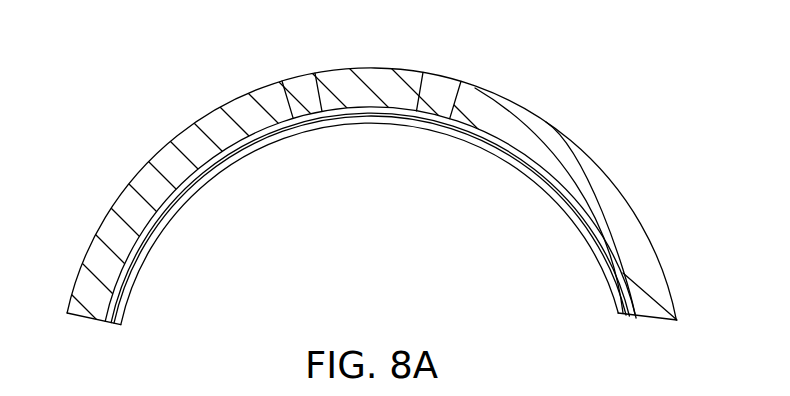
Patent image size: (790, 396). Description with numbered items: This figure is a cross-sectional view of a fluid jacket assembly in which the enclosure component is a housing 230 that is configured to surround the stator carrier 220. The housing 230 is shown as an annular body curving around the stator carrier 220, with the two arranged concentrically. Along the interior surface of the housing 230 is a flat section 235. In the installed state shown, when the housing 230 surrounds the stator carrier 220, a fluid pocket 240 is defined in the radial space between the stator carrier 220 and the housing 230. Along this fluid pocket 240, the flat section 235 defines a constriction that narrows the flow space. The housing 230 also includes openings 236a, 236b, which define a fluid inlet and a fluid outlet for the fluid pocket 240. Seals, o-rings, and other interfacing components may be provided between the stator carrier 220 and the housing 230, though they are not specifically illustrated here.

The stator carrier 220 is at (405, 128).
The housing 230 is at (572, 166).
The flat section 235 is at (370, 114).
The opening 236a is at (291, 92).
The opening 236b is at (466, 94).
The fluid pocket 240 is at (160, 180).